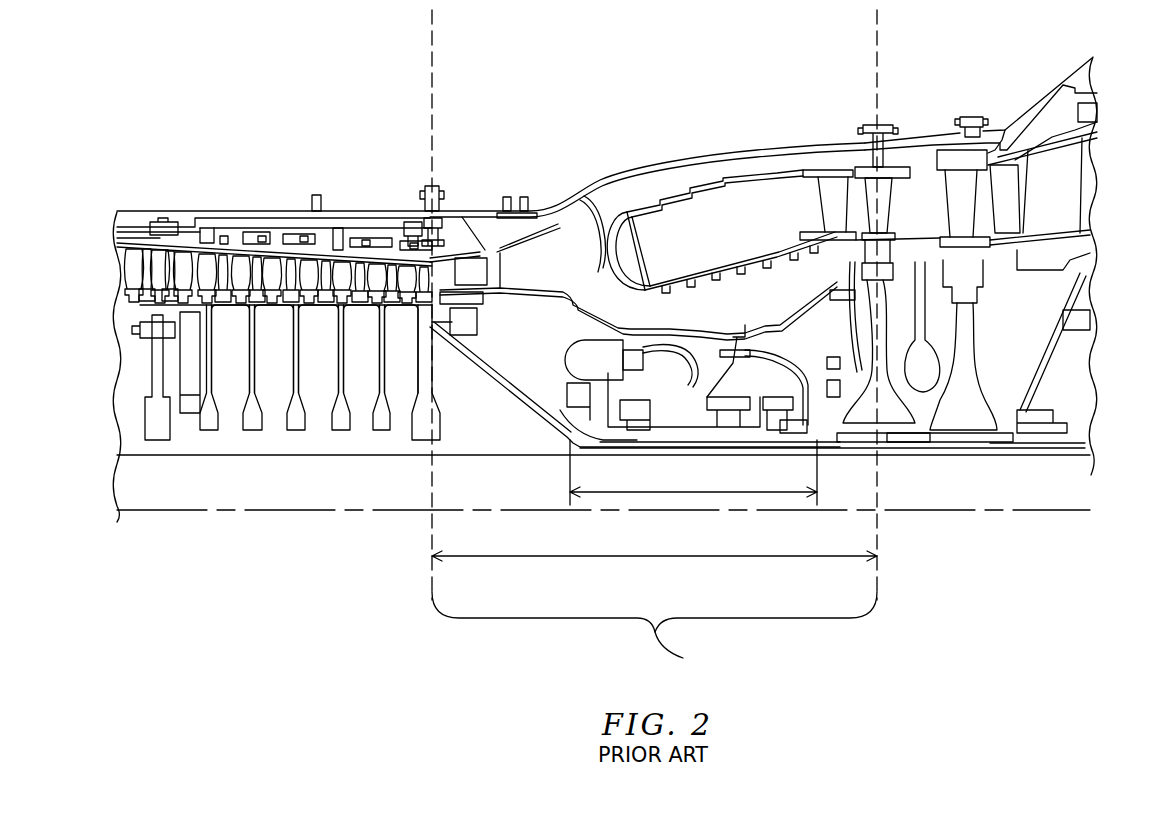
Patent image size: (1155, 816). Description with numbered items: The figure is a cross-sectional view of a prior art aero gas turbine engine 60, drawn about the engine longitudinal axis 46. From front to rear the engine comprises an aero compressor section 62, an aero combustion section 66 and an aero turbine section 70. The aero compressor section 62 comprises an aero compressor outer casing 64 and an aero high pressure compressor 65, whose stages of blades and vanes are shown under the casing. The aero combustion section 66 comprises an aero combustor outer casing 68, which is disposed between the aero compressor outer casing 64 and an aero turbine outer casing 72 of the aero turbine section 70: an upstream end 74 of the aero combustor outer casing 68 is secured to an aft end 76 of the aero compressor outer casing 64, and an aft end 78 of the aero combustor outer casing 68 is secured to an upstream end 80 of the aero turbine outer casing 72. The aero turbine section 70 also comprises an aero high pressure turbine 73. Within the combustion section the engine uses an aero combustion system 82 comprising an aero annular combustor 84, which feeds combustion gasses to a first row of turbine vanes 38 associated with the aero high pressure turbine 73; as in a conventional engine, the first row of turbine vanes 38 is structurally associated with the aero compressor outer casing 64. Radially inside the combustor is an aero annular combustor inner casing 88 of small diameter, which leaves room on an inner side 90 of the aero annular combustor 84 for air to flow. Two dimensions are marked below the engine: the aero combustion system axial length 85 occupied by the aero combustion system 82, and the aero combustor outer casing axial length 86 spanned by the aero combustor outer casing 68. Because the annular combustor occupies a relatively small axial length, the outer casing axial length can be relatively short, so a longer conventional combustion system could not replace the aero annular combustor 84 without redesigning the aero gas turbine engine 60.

The aero gas turbine engine 60 is at (707, 36).
The aero compressor section 62 is at (217, 178).
The aero compressor outer casing 64 is at (152, 211).
The aero high pressure compressor 65 is at (313, 220).
The aft end of the aero compressor outer casing 76 is at (410, 212).
The upstream end of the aero combustor outer casing 74 is at (452, 211).
The aero combustor outer casing 68 is at (640, 173).
The aero annular combustor inner casing 88 is at (570, 320).
The aero combustion system 82 is at (705, 230).
The aero annular combustor 84 is at (690, 234).
The inner side of the aero annular combustor 90 is at (728, 280).
The first row of turbine vanes 38 is at (830, 203).
The aft end of the aero combustor outer casing 78 is at (845, 133).
The upstream end of the aero turbine outer casing 80 is at (900, 132).
The aero turbine outer casing 72 is at (920, 143).
The aero turbine section 70 is at (1009, 58).
The aero high pressure turbine 73 is at (947, 193).
The aero combustion system axial length 85 is at (700, 492).
The aero combustor outer casing axial length 86 is at (620, 556).
The aero combustion section 66 is at (654, 632).
The engine longitudinal axis 46 is at (1005, 510).